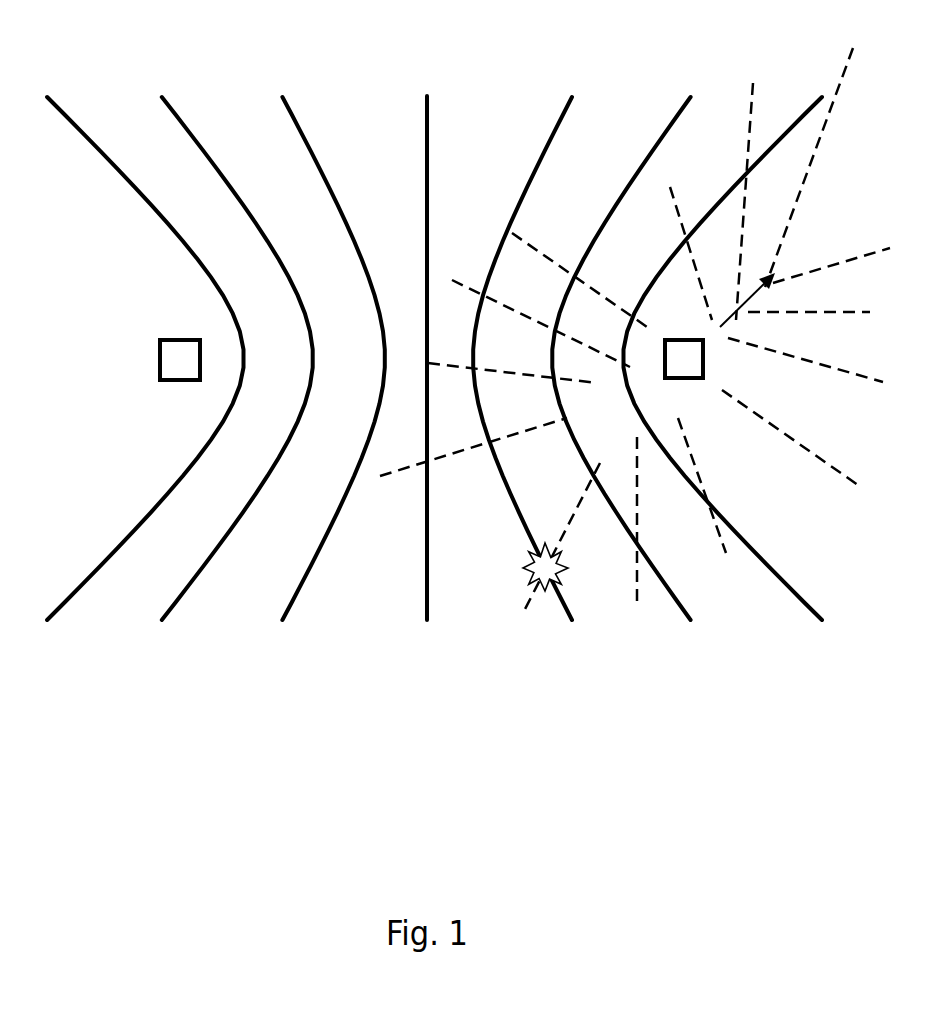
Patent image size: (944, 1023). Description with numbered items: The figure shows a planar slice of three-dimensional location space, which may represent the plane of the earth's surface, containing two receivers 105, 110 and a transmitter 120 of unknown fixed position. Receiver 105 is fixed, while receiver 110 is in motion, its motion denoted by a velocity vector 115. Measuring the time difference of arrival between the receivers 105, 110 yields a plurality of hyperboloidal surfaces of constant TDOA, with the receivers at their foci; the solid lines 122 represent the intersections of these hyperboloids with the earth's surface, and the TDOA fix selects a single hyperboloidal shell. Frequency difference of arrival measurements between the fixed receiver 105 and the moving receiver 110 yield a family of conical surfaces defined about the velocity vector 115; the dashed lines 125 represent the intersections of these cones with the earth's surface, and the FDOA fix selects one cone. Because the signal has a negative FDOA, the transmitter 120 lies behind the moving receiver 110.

The receiver 105 is at (173, 327).
The receiver 110 is at (697, 397).
The velocity vector 115 is at (740, 318).
The transmitter 120 is at (524, 563).
The solid lines 122 is at (322, 123).
The dashed lines 125 is at (768, 78).